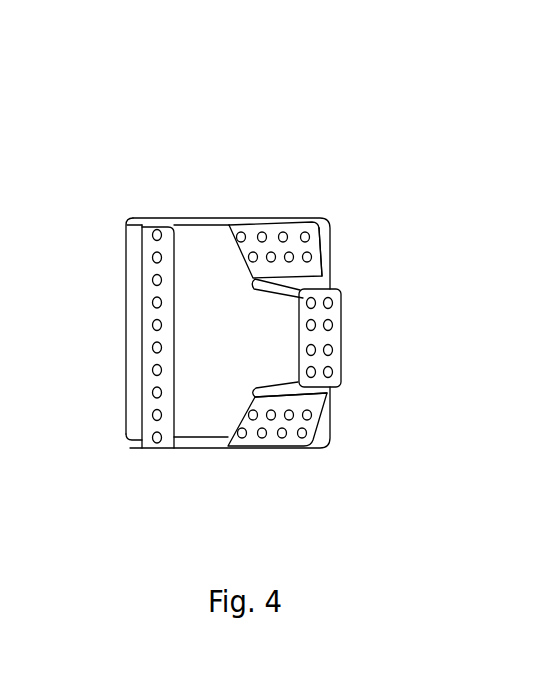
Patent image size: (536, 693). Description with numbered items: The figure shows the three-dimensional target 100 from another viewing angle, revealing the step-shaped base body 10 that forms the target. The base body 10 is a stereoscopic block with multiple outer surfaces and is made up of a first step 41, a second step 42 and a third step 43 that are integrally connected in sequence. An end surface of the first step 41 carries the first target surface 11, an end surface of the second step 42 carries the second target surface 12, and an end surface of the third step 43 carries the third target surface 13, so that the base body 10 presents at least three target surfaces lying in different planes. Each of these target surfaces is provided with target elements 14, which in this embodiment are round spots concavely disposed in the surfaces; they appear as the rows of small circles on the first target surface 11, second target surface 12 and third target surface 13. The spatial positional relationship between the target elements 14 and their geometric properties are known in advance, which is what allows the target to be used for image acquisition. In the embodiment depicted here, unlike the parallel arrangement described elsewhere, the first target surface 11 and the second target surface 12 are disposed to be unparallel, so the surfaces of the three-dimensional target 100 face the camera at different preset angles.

The three-dimensional target 100 is at (155, 136).
The base body 10 is at (209, 418).
The first target surface 11 is at (327, 342).
The second target surface 12 is at (294, 233).
The third target surface 13 is at (324, 250).
The target elements 14 is at (329, 372).
The first step 41 is at (304, 292).
The second step 42 is at (243, 222).
The third step 43 is at (133, 250).